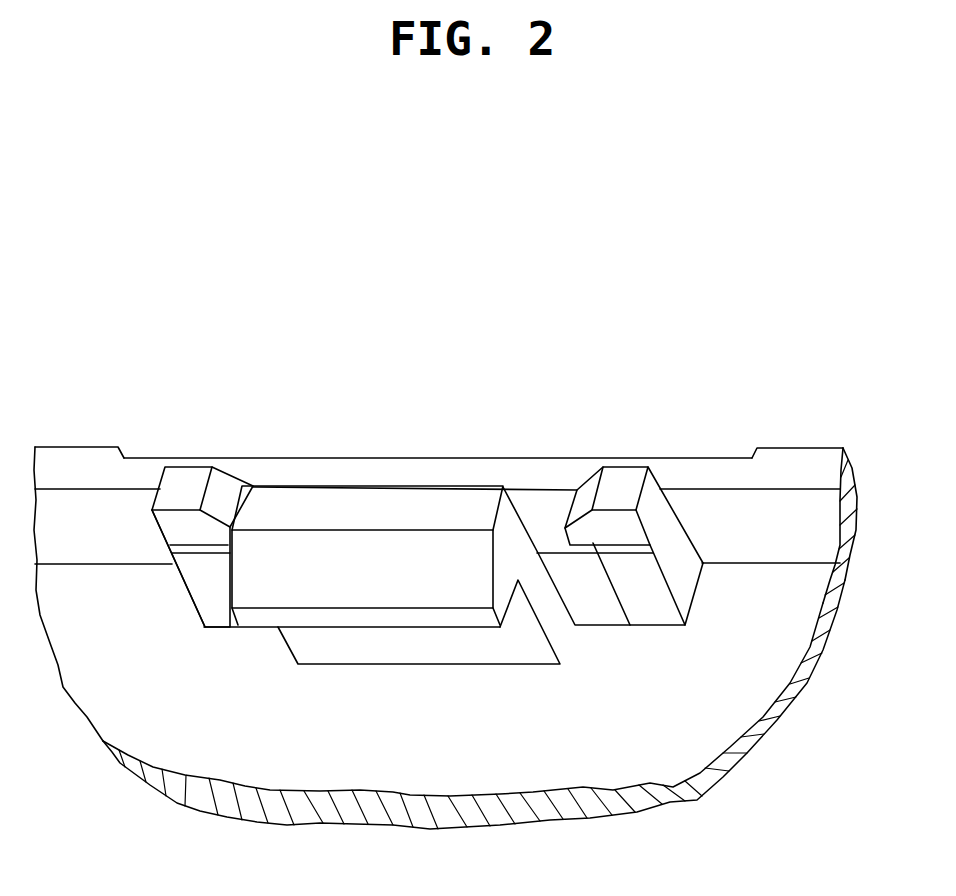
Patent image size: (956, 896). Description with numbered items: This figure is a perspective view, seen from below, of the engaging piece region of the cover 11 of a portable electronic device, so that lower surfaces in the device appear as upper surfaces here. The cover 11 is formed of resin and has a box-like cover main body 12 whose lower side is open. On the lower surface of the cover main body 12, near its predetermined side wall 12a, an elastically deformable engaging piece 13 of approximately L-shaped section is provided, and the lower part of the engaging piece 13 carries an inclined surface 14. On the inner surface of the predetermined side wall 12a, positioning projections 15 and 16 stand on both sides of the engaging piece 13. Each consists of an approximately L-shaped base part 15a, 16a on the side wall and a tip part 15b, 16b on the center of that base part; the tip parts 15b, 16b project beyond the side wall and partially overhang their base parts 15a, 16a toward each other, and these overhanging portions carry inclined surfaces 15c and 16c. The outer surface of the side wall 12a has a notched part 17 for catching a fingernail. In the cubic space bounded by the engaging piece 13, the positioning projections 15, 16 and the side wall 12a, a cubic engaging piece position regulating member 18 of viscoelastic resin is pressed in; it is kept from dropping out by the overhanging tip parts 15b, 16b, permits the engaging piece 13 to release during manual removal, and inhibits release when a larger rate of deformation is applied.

The cover 11 is at (821, 448).
The cover main body 12 is at (662, 767).
The predetermined side wall 12a is at (768, 460).
The engaging piece 13 is at (447, 648).
The inclined surface 14 is at (355, 593).
The positioning projection 15 is at (184, 545).
The base part 15a is at (193, 598).
The tip part 15b is at (177, 470).
The inclined surface 15c is at (225, 478).
The positioning projection 16 is at (657, 546).
The base part 16a is at (687, 590).
The tip part 16b is at (625, 477).
The inclined surface 16c is at (588, 494).
The notched part 17 is at (705, 457).
The engaging piece position regulating member 18 is at (592, 620).